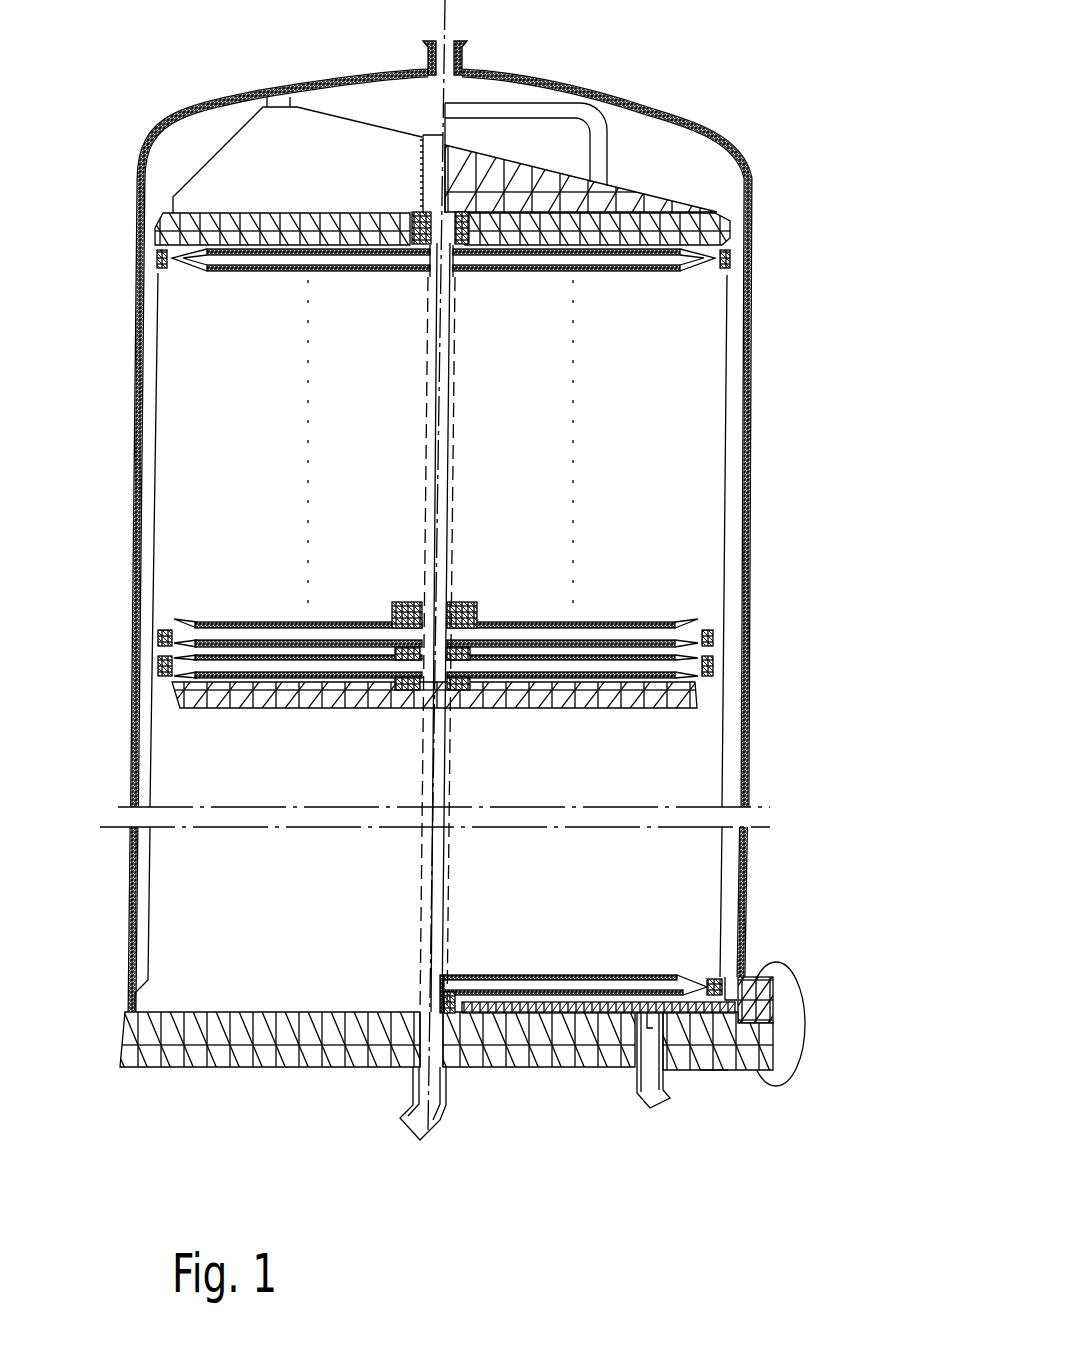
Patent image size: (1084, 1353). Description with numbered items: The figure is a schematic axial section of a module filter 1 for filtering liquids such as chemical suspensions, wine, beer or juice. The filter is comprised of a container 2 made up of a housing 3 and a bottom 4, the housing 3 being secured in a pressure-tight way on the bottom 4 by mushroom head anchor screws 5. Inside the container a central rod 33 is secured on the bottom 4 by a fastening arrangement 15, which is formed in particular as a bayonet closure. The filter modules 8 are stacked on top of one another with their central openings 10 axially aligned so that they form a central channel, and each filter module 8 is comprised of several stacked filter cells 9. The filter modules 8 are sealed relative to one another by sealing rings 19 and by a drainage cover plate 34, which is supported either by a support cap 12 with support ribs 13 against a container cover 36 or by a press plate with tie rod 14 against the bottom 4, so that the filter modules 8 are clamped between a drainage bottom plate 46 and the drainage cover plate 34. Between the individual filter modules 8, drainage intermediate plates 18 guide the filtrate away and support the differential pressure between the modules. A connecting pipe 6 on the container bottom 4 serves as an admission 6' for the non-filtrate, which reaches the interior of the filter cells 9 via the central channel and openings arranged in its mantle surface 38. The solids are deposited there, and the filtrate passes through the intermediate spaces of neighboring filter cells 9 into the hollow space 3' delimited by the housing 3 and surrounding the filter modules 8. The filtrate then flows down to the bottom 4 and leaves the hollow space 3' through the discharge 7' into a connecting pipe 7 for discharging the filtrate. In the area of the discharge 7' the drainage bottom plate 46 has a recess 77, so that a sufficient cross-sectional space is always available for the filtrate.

The module filter 1 is at (516, 602).
The container 2 is at (775, 204).
The housing 3 is at (486, 743).
The hollow space 3' is at (491, 642).
The bottom 4 is at (558, 1057).
The mushroom head anchor screws 5 is at (800, 968).
The connecting pipe 6 is at (436, 1133).
The admission 6' is at (385, 1073).
The connecting pipe 7 is at (656, 1108).
The discharge 7' is at (692, 1083).
The recess 77 is at (713, 1068).
The filter modules 8 is at (435, 630).
The filter cells 9 is at (630, 620).
The central openings 10 is at (426, 278).
The support cap 12 is at (200, 155).
The support ribs 13 is at (322, 122).
The press plate with tie rod 14 is at (637, 197).
The fastening arrangement 15 is at (463, 974).
The drainage intermediate plates 18 is at (625, 700).
The sealing rings 19 is at (465, 600).
The central rod 33 is at (447, 405).
The drainage cover plate 34 is at (730, 236).
The container cover 36 is at (580, 78).
The mantle surface 38 is at (426, 665).
The drainage bottom plate 46 is at (507, 1060).